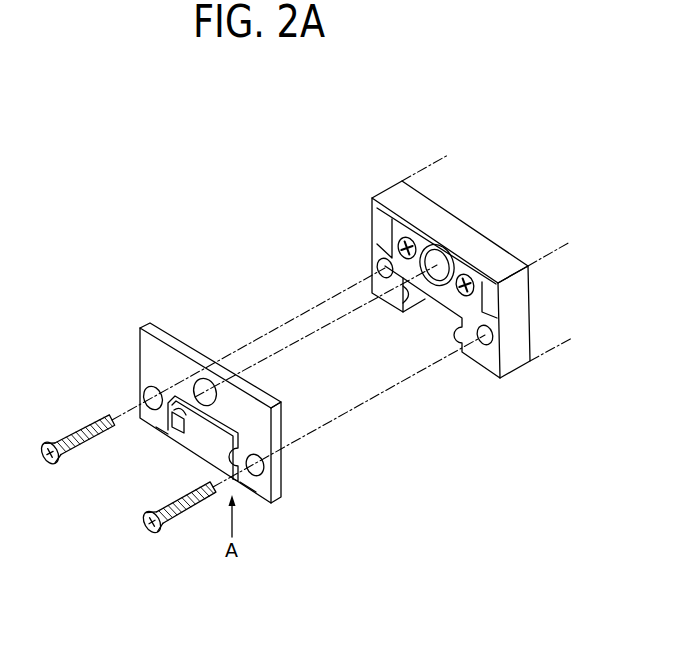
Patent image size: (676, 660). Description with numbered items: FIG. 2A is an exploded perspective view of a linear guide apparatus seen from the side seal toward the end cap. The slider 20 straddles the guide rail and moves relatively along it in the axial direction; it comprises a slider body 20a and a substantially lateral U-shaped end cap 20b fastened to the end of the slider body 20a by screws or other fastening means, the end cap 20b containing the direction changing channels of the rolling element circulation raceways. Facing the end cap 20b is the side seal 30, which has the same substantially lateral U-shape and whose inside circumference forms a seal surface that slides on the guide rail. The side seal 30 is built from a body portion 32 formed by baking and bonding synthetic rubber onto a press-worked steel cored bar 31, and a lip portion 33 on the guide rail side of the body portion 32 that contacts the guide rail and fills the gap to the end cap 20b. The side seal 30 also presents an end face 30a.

The slider 20 is at (332, 143).
The slider body 20a is at (430, 177).
The end cap 20b is at (395, 197).
The side seal 30 is at (127, 315).
The end face 30a is at (165, 434).
The cored bar 31 is at (212, 434).
The body portion 32 is at (152, 361).
The lip portion 33 is at (178, 443).